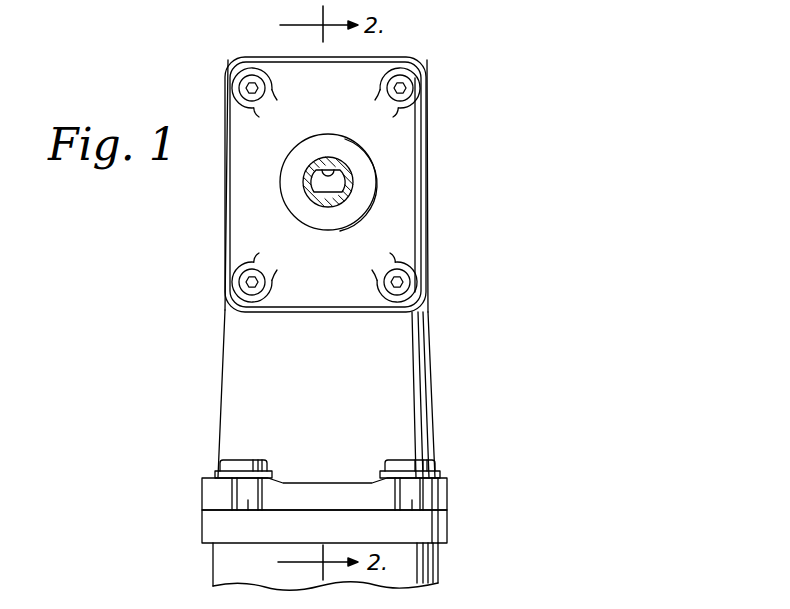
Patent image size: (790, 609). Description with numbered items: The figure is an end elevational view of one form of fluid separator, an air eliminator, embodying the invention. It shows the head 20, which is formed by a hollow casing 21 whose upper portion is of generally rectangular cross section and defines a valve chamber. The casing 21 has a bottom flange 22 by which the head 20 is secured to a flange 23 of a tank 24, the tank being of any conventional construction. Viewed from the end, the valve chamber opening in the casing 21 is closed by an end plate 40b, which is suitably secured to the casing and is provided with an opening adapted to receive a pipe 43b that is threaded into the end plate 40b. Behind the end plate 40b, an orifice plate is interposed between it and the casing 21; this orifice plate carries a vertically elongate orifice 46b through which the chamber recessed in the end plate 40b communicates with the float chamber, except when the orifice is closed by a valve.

The head 20 is at (212, 357).
The hollow casing 21 is at (427, 383).
The bottom flange 22 is at (447, 490).
The flange 23 is at (202, 523).
The tank 24 is at (446, 561).
The end plate 40b is at (395, 147).
The pipe 43b is at (318, 205).
The vertically elongate orifice 46b is at (335, 163).